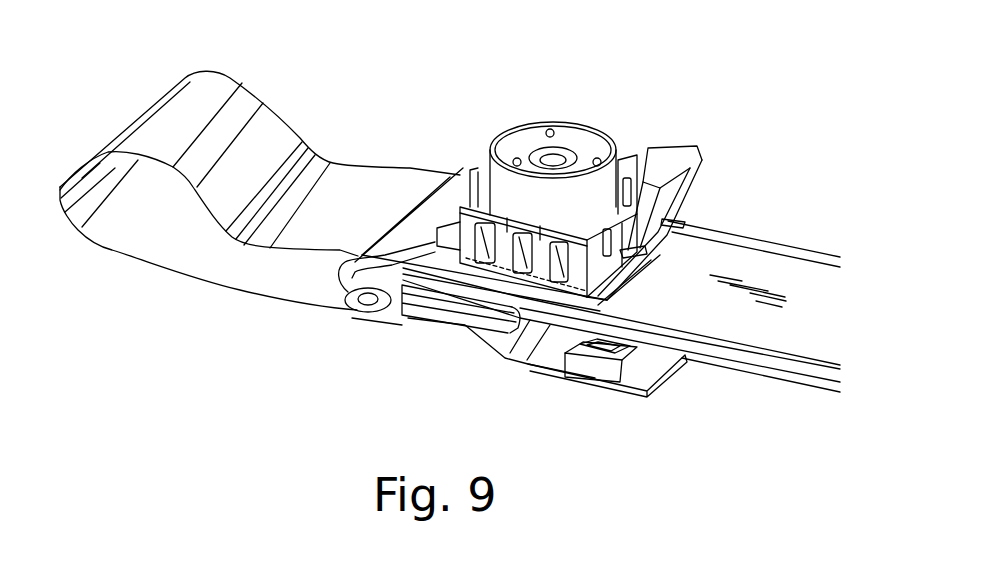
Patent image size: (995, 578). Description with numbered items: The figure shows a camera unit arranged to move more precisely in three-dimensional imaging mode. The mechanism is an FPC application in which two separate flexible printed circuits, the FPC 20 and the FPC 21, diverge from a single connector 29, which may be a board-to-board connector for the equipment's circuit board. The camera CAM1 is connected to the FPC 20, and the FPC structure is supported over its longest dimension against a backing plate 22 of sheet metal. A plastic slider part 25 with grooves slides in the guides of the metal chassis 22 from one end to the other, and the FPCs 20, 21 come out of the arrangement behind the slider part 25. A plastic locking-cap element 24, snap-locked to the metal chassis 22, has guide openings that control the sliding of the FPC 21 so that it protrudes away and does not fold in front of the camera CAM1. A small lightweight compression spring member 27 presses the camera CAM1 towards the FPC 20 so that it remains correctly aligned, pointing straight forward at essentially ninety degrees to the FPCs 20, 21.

The FPC 20 is at (777, 268).
The FPC 21 is at (207, 80).
The plate of sheet metal 22 is at (763, 358).
The locking-cap element 24 is at (352, 318).
The slider part 25 is at (663, 153).
The compression spring member 27 is at (680, 215).
The connector 29 is at (590, 366).
The camera CAM1 is at (557, 92).